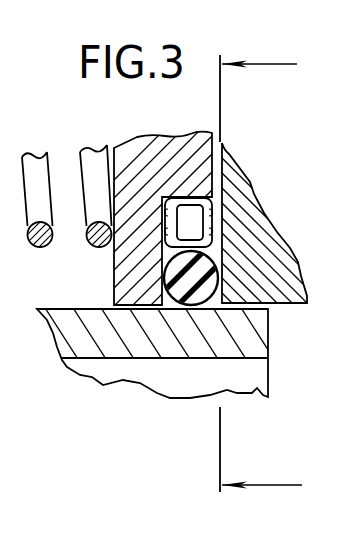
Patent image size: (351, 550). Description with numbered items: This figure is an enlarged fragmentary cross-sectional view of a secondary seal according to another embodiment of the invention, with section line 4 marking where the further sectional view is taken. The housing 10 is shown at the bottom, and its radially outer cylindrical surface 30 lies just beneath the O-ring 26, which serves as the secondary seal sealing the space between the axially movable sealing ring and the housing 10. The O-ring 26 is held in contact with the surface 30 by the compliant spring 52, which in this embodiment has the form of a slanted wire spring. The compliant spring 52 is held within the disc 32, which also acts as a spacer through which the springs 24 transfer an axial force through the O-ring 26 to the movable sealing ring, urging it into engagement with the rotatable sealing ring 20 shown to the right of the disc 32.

The section line 4- 4 is at (261, 272).
The housing 10 is at (155, 347).
The rotatable sealing ring 20 is at (268, 282).
The springs 24 is at (42, 247).
The O-ring 26 is at (192, 308).
The radially outer cylindrical surface 30 is at (102, 308).
The disc 32 is at (157, 147).
The compliant spring 52 is at (213, 226).